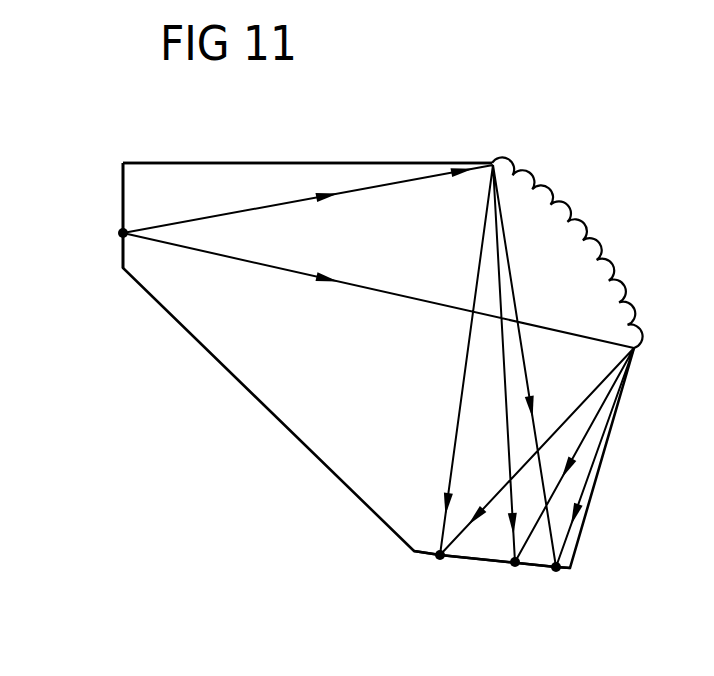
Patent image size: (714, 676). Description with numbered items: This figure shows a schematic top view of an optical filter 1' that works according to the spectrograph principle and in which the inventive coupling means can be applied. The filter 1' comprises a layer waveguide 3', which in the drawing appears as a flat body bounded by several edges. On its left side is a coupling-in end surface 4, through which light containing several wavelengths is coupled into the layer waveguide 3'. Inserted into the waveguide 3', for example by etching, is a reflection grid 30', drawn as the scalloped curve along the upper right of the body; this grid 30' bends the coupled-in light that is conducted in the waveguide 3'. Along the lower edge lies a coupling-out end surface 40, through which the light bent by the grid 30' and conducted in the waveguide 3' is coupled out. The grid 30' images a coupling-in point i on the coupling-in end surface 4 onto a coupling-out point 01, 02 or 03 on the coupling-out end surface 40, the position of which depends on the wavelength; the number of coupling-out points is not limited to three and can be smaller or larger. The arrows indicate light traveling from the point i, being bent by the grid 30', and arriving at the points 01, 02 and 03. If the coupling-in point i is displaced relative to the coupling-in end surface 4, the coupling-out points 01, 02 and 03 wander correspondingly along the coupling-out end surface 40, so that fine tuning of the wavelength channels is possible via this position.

The optical filter 1' is at (378, 306).
The layer waveguide 3' is at (307, 139).
The coupling-in end surface 4 is at (122, 189).
The coupling-in point i is at (120, 236).
The reflection grid 30' is at (571, 251).
The coupling-out end surface 40 is at (480, 567).
The coupling-out point 01 is at (440, 562).
The coupling-out point 02 is at (516, 568).
The coupling-out point 03 is at (557, 572).